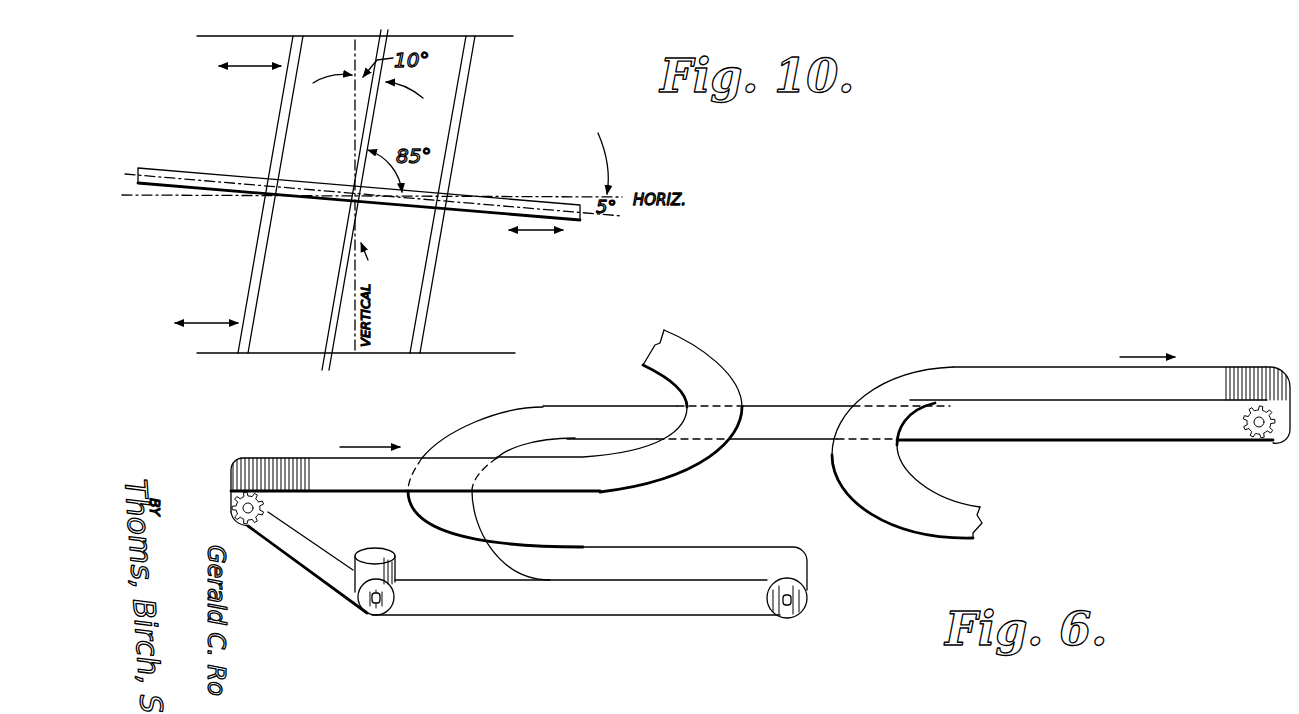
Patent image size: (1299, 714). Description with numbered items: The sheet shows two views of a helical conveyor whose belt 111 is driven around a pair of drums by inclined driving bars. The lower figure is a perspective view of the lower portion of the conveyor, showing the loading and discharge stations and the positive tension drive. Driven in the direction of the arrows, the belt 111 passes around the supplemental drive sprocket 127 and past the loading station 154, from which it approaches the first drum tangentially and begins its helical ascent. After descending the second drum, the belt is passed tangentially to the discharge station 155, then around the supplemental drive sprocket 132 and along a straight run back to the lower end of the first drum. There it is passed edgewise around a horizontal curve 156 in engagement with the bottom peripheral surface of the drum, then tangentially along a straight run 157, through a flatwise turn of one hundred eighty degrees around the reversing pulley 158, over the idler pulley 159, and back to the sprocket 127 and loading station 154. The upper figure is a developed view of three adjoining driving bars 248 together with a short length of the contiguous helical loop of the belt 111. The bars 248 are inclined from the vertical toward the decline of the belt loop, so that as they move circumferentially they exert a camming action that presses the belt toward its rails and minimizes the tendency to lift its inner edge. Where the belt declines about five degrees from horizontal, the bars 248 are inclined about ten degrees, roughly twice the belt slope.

In FIG. 10, the belt 111 is at (205, 153).
In FIG. 6, the belt 111 is at (707, 363).
In FIG. 10, the driving bars 248 is at (342, 250).
In FIG. 6, the loading station 154 is at (293, 453).
In FIG. 6, the discharge station 155 is at (1240, 340).
In FIG. 6, the horizontal curve 156 is at (430, 453).
In FIG. 6, the straight run 157 is at (727, 533).
In FIG. 6, the reversing pulley 158 is at (797, 610).
In FIG. 6, the idler pulley 159 is at (387, 613).
In FIG. 6, the supplemental drive sprocket 127 is at (270, 506).
In FIG. 6, the supplemental drive sprocket 132 is at (1277, 443).